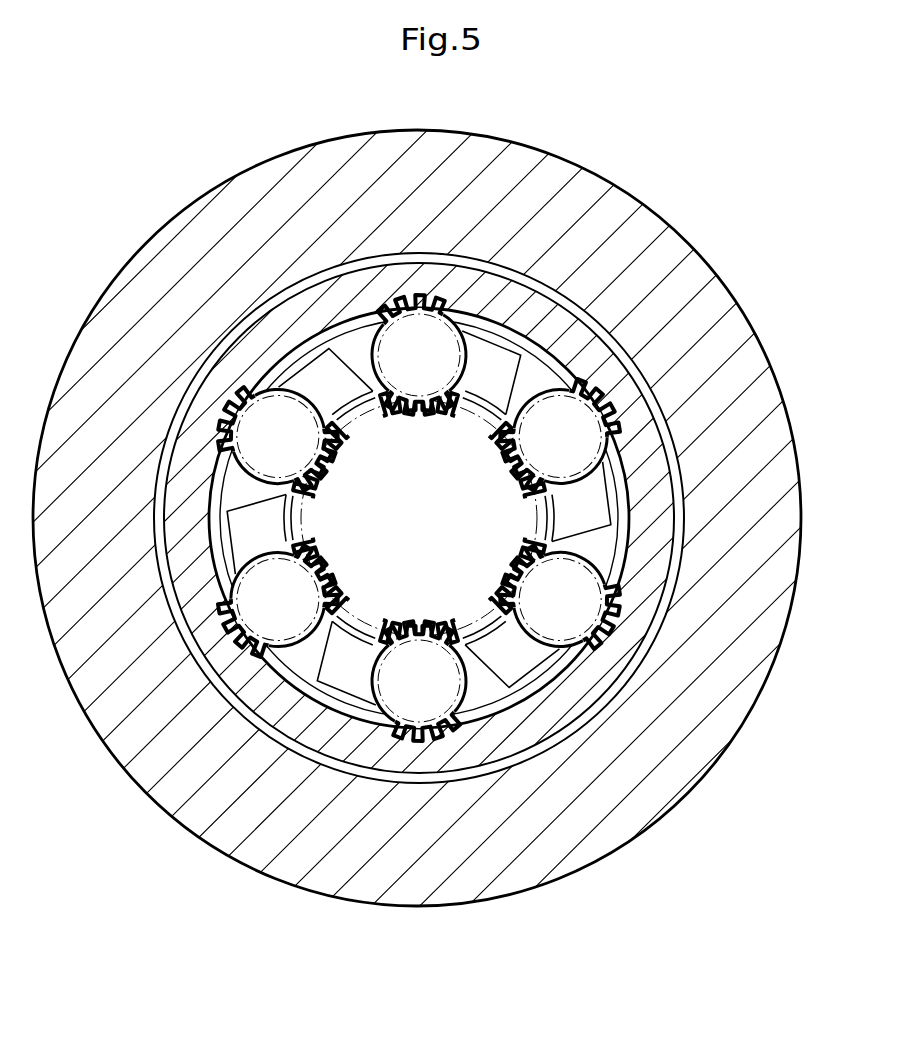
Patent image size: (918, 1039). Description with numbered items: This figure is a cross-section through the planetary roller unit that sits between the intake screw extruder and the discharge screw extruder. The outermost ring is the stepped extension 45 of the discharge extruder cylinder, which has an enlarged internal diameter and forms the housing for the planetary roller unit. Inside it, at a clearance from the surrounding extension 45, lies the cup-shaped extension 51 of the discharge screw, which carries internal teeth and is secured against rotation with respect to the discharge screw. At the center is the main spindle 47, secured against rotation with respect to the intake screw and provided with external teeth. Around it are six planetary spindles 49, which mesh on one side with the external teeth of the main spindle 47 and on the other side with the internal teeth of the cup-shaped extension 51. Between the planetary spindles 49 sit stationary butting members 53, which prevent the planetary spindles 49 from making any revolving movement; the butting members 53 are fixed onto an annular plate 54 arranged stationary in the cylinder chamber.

The extension 45 is at (541, 185).
The cup-shaped extension 51 is at (563, 318).
The main spindle 47 is at (478, 521).
The planetary spindles 49 is at (403, 362).
The butting members 53 is at (478, 636).
The annular plate 54 is at (300, 652).